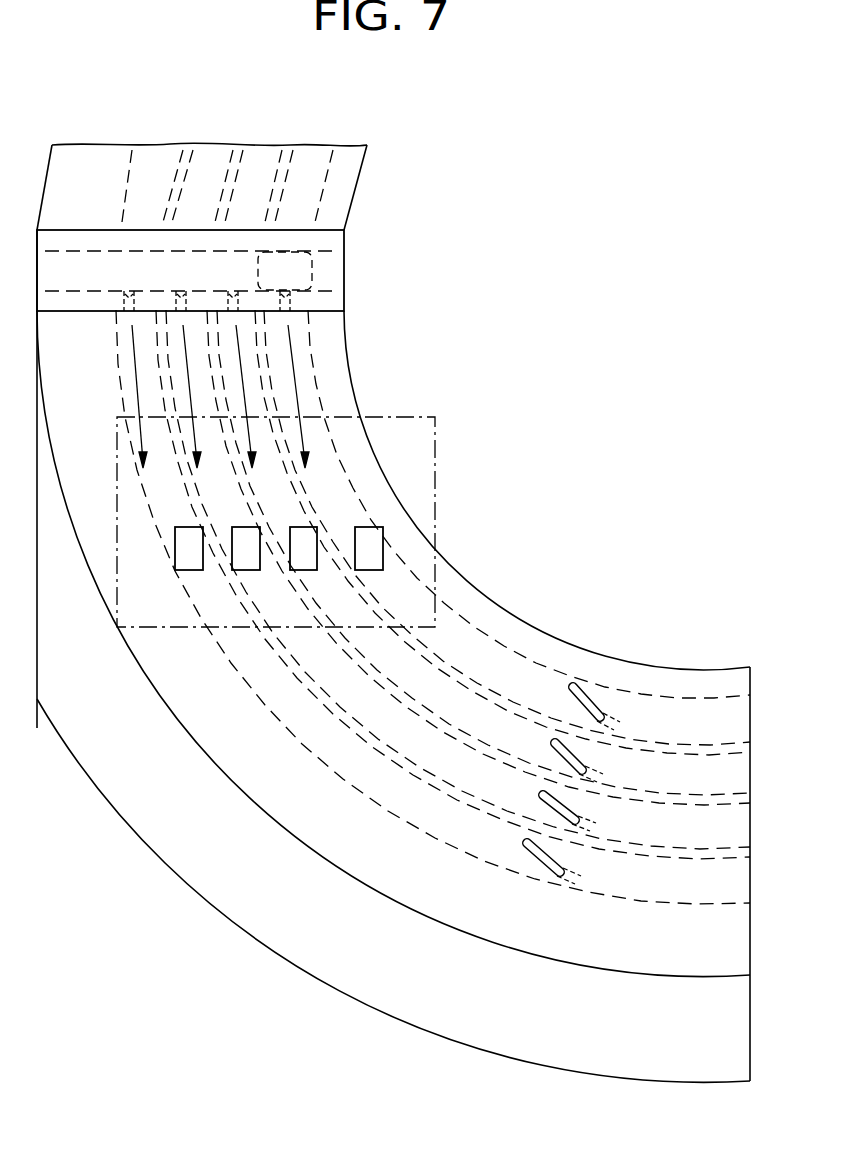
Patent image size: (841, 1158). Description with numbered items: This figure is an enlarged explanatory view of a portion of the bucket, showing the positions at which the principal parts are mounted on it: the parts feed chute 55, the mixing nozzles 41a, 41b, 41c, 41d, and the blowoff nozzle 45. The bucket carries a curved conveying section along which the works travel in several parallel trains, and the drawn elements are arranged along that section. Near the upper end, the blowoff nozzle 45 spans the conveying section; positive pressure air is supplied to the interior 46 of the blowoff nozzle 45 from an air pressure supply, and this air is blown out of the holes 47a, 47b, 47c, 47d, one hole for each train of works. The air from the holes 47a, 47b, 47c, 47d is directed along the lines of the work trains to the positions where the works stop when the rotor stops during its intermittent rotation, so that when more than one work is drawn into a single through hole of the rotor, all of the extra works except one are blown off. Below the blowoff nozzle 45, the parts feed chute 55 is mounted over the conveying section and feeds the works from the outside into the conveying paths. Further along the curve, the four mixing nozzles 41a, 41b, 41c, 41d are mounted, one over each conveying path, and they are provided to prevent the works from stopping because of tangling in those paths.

The blowoff nozzle 45 is at (344, 278).
The interior of the blowoff nozzle 46 is at (303, 253).
The hole of the blowoff nozzle 47a is at (121, 285).
The hole of the blowoff nozzle 47b is at (179, 287).
The hole of the blowoff nozzle 47c is at (232, 288).
The hole of the blowoff nozzle 47d is at (286, 288).
The parts feed chute 55 is at (437, 469).
The mixing nozzle 41a is at (536, 853).
The mixing nozzle 41b is at (550, 808).
The mixing nozzle 41c is at (557, 755).
The mixing nozzle 41d is at (593, 693).